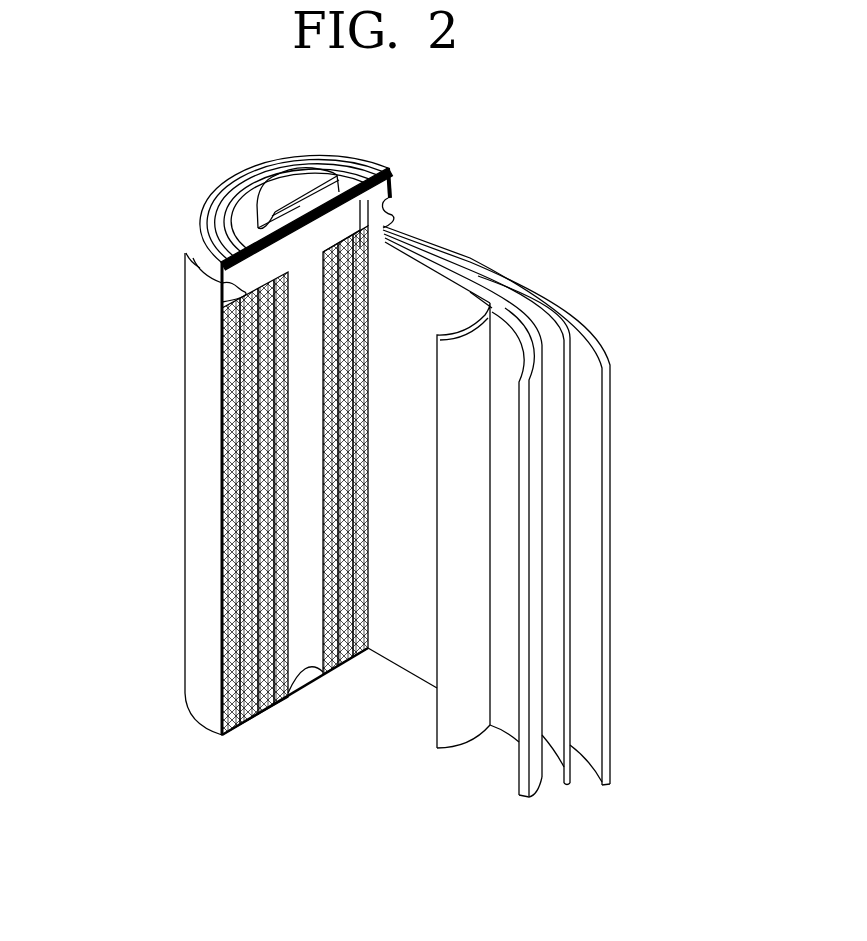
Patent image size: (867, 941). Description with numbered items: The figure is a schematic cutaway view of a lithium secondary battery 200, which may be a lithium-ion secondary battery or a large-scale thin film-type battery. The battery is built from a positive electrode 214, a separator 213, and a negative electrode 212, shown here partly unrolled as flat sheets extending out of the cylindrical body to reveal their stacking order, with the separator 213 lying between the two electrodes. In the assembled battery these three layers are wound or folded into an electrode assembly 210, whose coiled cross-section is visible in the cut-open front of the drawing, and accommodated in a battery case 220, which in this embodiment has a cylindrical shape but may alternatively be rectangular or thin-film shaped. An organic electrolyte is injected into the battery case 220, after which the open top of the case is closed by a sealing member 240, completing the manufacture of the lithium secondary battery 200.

The lithium secondary battery 200 is at (468, 172).
The electrode assembly 210 is at (295, 467).
The negative electrode 212 is at (602, 350).
The separator 213 is at (460, 330).
The positive electrode 214 is at (517, 320).
The battery case 220 is at (197, 393).
The sealing member 240 is at (282, 180).